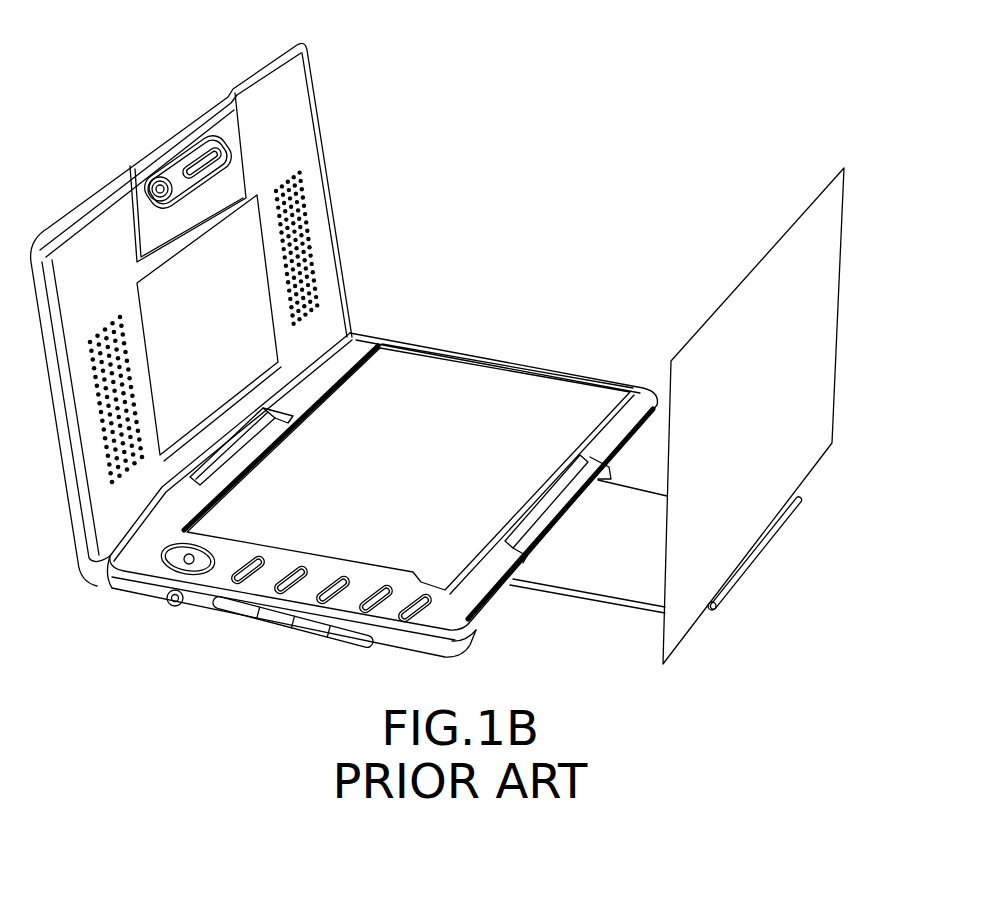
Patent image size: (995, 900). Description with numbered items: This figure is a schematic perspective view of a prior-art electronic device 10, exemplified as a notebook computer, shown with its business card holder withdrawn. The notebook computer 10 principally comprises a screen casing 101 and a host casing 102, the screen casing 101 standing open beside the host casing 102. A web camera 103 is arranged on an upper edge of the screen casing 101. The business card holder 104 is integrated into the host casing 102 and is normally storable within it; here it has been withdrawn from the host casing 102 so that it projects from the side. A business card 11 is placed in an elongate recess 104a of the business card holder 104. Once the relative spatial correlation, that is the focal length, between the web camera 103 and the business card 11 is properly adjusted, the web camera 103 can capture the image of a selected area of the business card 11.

The electronic device 10 is at (288, 102).
The screen casing 101 is at (328, 203).
The host casing 102 is at (446, 350).
The web camera 103 is at (154, 180).
The business card holder 104 is at (592, 577).
The elongate recess 104a is at (710, 607).
The business card 11 is at (818, 333).